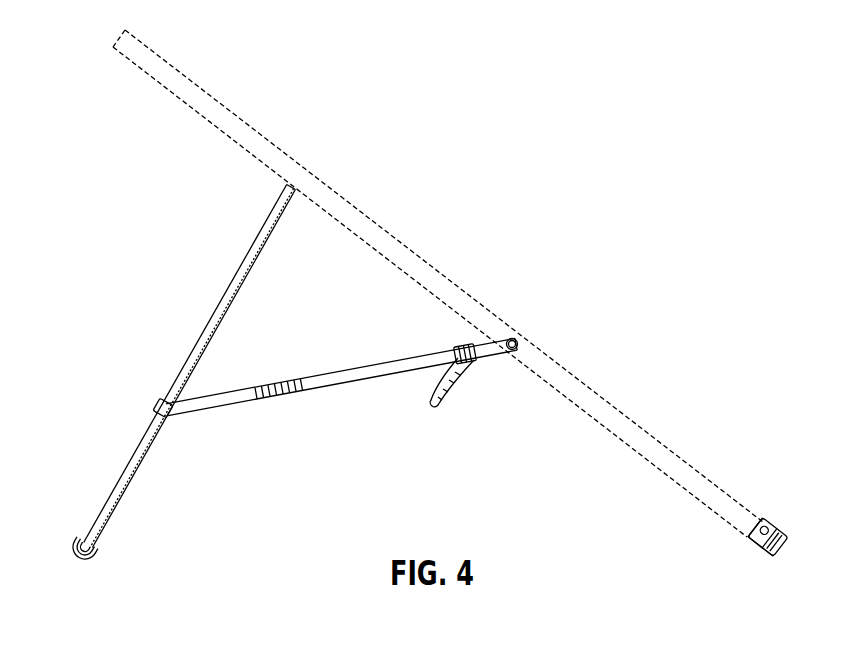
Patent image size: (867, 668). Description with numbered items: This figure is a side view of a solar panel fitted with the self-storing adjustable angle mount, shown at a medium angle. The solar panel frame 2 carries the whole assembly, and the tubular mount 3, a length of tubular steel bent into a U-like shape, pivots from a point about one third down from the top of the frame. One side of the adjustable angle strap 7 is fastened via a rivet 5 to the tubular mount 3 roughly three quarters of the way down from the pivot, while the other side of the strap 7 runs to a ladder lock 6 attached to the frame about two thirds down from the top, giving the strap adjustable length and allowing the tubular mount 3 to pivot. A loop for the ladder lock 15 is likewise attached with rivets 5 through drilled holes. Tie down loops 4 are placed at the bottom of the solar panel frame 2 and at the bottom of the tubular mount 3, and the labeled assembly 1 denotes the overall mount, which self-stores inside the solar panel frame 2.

The tubular shaft 1 is at (438, 283).
The solar panel frame 2 is at (630, 394).
The tubular mount 3 is at (190, 366).
The tie down loops 4 is at (408, 576).
The rivet 5 is at (670, 407).
The ladder lock 6 is at (477, 391).
The adjustable angle strap 7 is at (341, 356).
The loop for ladder lock 15 is at (502, 302).